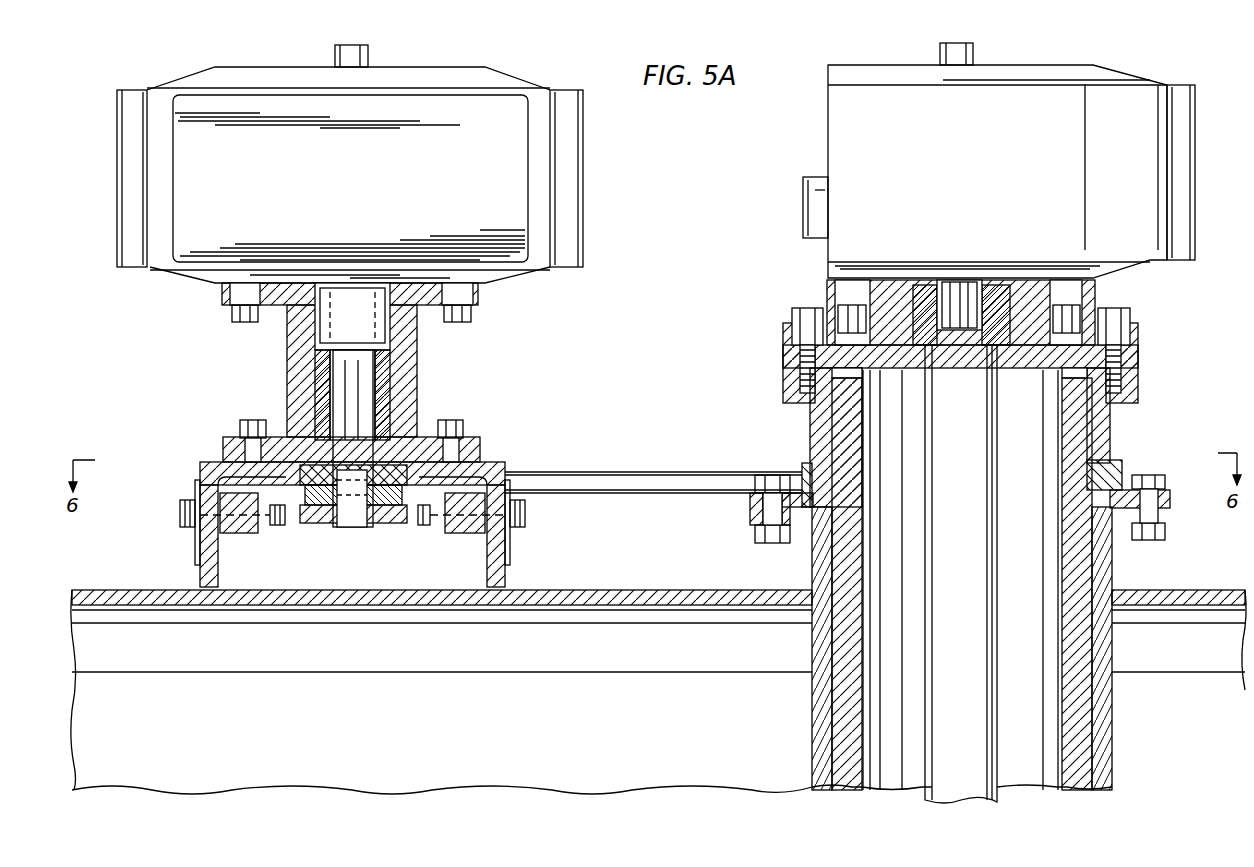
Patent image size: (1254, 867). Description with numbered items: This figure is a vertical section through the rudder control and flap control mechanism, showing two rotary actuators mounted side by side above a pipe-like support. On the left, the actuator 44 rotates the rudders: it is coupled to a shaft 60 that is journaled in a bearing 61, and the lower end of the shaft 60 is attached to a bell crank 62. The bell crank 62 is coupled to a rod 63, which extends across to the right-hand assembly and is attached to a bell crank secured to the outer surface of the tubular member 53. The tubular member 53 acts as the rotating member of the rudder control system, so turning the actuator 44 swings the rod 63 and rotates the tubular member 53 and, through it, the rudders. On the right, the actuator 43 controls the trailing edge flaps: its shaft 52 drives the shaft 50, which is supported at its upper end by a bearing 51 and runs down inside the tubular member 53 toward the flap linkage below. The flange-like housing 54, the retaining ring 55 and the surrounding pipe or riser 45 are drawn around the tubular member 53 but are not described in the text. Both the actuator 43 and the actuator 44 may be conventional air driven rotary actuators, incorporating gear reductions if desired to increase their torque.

The actuator 43 is at (1197, 158).
The actuator 44 is at (583, 157).
The pipe / riser 45 is at (1105, 560).
The shaft 50 is at (935, 655).
The bearing 51 is at (1010, 300).
The shaft 52 is at (950, 290).
The tubular member 53 is at (1070, 572).
The housing body 54 is at (1103, 427).
The retaining ring 55 is at (1113, 477).
The shaft 60 is at (355, 407).
The bearing 61 is at (385, 370).
The bell crank 62 is at (393, 523).
The rod 63 is at (627, 480).